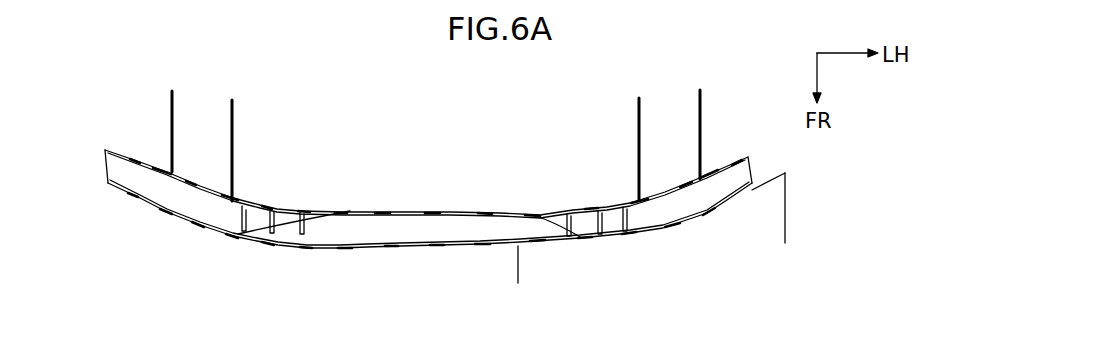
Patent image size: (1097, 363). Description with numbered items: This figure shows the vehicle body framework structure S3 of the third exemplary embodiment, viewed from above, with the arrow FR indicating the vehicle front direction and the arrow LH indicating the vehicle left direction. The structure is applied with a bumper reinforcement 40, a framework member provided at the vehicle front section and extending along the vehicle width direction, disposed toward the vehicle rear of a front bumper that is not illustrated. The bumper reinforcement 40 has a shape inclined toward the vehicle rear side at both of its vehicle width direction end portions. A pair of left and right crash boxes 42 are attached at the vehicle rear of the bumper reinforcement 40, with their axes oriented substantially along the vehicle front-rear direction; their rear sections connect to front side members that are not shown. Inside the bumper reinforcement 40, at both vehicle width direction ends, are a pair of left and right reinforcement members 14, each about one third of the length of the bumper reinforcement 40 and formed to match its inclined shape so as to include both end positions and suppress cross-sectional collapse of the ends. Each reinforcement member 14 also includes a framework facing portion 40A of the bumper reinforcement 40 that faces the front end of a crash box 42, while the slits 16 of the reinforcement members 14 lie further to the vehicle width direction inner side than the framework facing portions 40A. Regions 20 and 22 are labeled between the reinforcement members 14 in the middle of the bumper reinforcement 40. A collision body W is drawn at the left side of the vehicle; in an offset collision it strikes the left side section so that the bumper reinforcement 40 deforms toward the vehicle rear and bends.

The reinforcement member 14 is at (162, 192).
The slit 16 is at (242, 207).
The lower portion 20 is at (338, 247).
The upper portion 22 is at (432, 216).
The bumper reinforcement 40 is at (442, 249).
The framework facing portion 40A is at (223, 232).
The crash box 42 is at (233, 122).
The vehicle body framework structure S3 is at (438, 134).
The collision body W is at (786, 207).